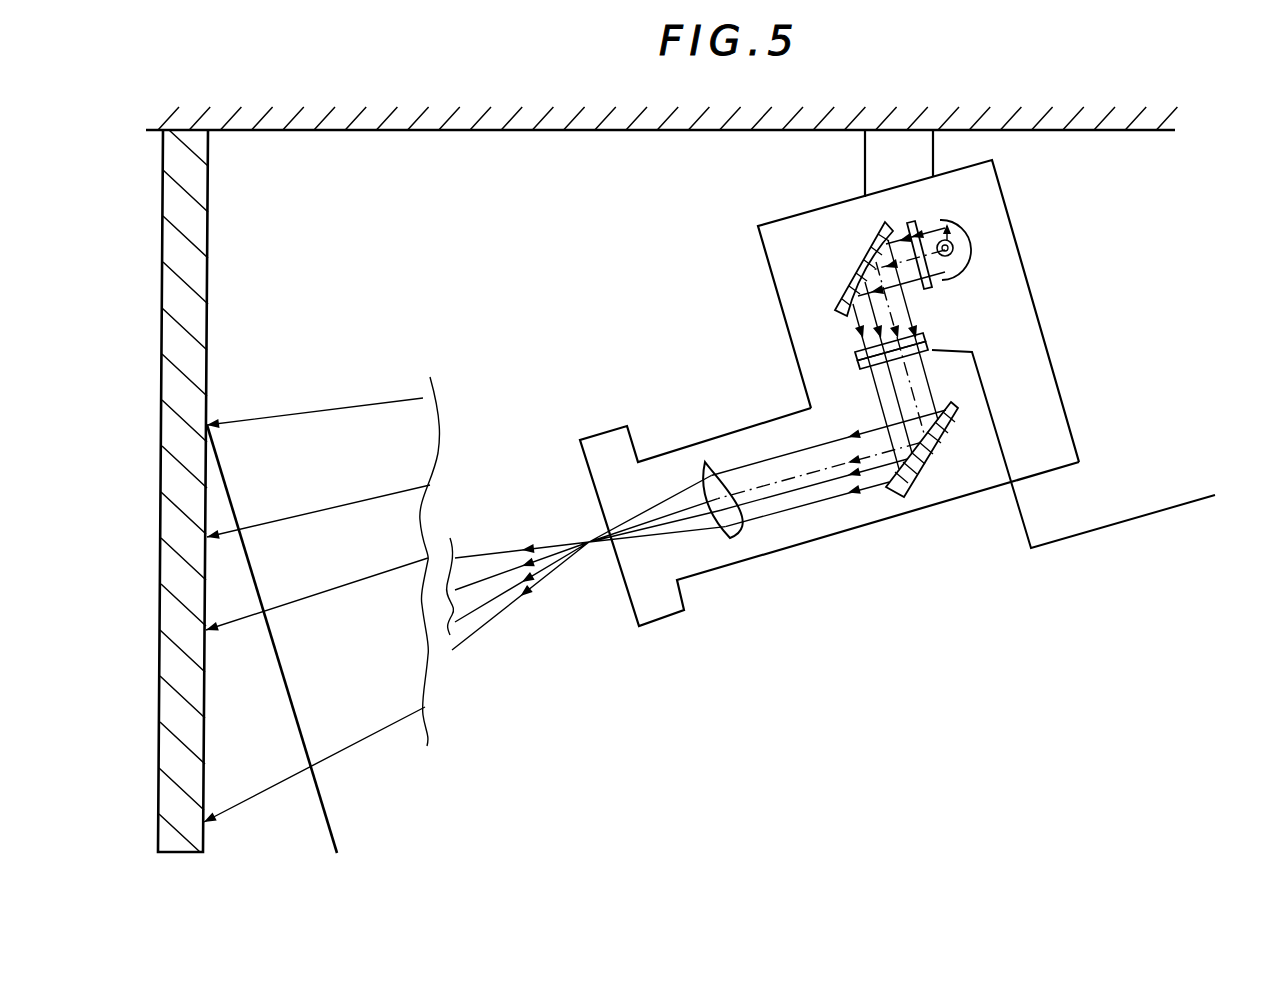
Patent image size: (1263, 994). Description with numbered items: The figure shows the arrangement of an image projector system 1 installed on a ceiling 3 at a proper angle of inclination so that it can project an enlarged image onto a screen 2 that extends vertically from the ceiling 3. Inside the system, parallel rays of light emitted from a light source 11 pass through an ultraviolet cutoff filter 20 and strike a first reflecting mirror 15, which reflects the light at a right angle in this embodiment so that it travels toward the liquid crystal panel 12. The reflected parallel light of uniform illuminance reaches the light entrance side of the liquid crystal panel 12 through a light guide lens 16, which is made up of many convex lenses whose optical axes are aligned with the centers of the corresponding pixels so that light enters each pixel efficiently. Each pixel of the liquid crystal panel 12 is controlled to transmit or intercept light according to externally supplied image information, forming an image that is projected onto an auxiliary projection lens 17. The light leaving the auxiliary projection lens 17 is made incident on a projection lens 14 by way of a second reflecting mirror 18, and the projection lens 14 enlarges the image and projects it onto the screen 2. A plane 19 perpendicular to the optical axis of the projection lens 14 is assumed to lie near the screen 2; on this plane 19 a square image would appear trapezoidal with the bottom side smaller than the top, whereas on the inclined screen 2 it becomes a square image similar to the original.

The image projector system 1 is at (690, 423).
The screen 2 is at (208, 272).
The ceiling 3 is at (478, 131).
The light source 11 is at (962, 225).
The liquid crystal panel 12 is at (1119, 360).
The projection lens 14 is at (739, 528).
The first reflecting mirror 15 is at (847, 282).
The light guide lens 16 is at (933, 333).
The auxiliary projection lens 17 is at (935, 345).
The second reflecting mirror 18 is at (921, 473).
The plane 19 is at (328, 798).
The ultraviolet cutoff filter 20 is at (913, 222).